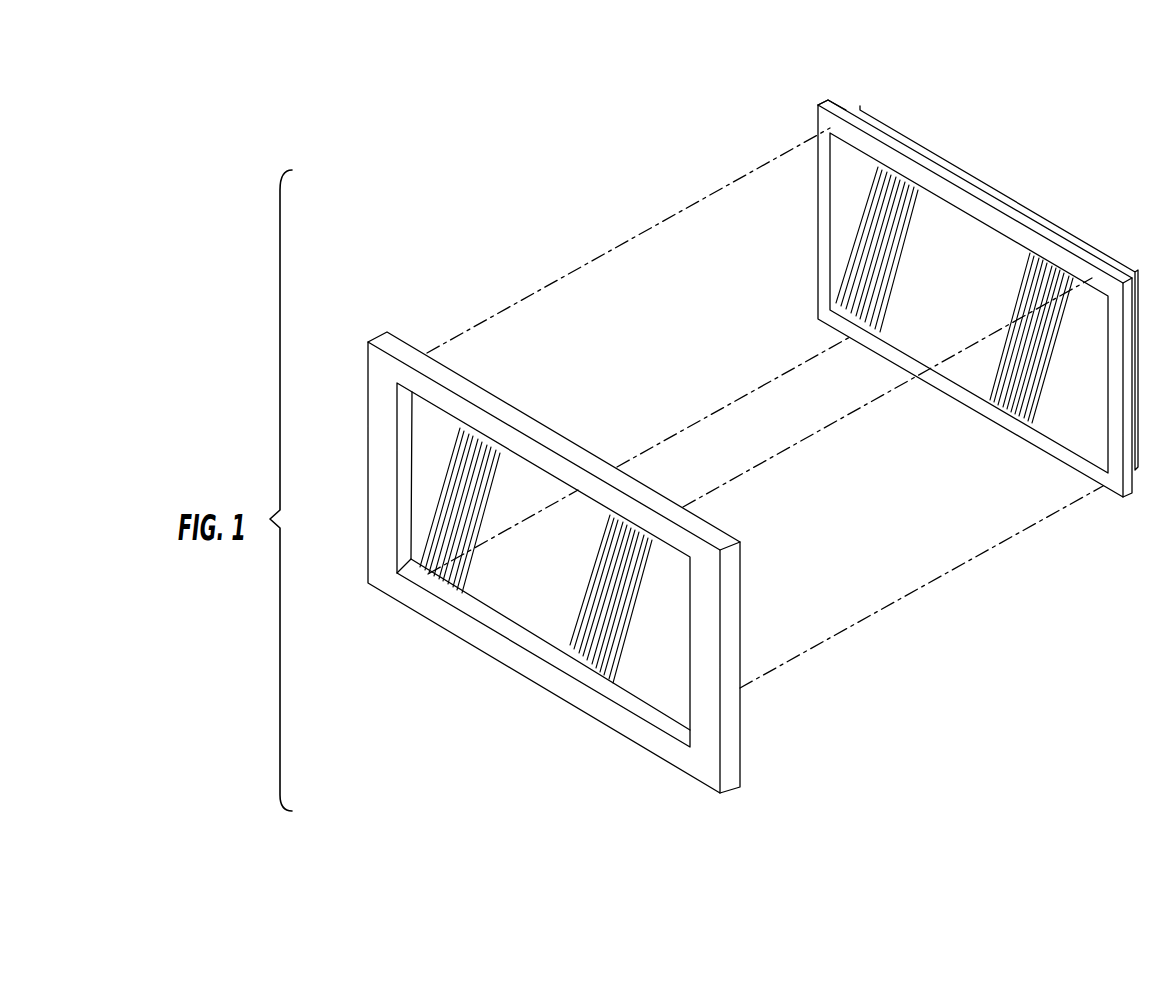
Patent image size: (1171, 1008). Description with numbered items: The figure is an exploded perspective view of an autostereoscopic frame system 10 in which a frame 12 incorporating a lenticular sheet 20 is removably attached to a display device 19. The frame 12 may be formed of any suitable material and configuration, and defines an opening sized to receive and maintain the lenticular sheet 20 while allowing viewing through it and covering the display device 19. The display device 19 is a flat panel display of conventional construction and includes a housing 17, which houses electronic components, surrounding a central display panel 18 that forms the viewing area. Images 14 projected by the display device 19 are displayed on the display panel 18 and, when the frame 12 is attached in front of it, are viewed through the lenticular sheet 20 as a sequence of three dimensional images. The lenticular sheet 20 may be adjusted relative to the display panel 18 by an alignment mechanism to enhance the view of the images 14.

The autostereoscopic frame system 10 is at (547, 207).
The frame 12 is at (699, 768).
The images 14 is at (1072, 436).
The housing 17 is at (931, 151).
The display panel 18 is at (1117, 487).
The display device 19 is at (829, 85).
The lenticular sheet 20 is at (563, 621).